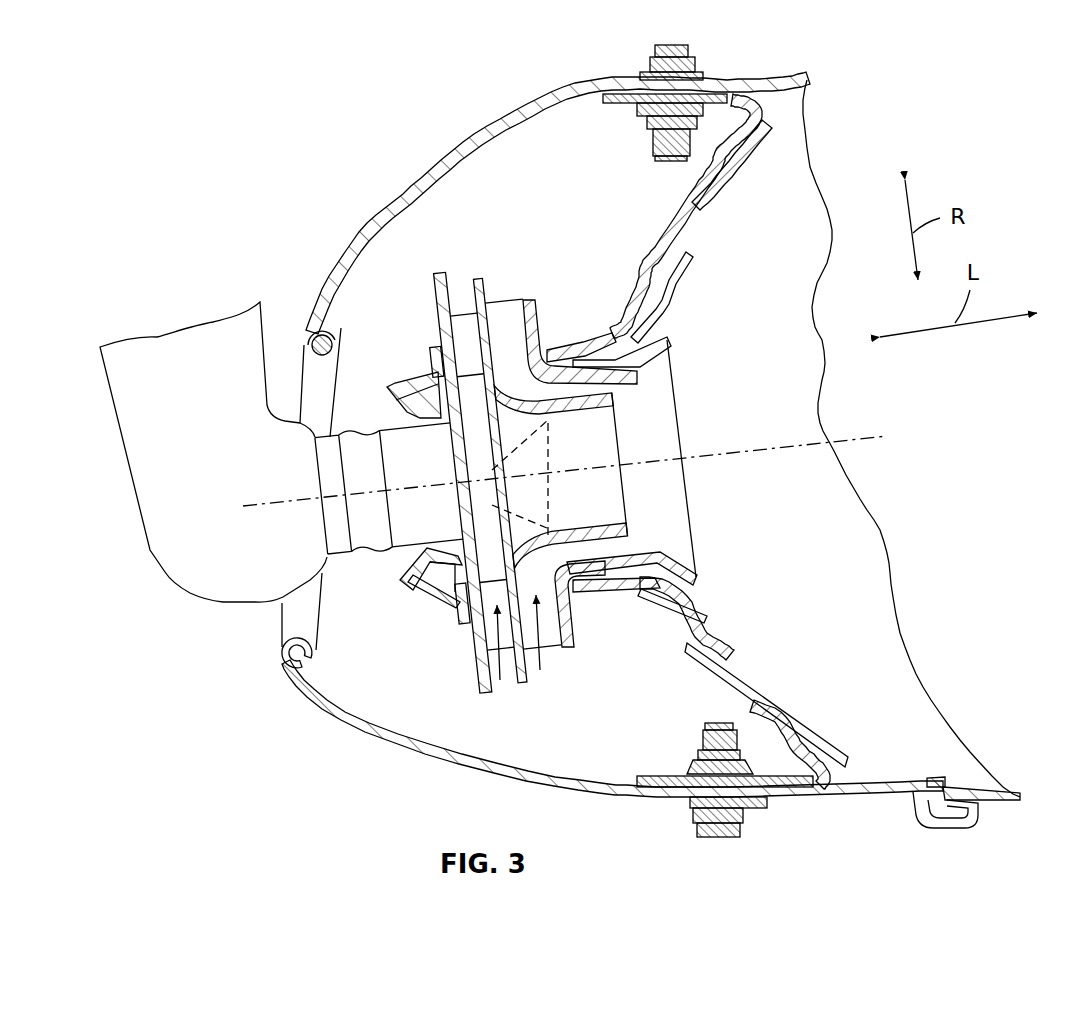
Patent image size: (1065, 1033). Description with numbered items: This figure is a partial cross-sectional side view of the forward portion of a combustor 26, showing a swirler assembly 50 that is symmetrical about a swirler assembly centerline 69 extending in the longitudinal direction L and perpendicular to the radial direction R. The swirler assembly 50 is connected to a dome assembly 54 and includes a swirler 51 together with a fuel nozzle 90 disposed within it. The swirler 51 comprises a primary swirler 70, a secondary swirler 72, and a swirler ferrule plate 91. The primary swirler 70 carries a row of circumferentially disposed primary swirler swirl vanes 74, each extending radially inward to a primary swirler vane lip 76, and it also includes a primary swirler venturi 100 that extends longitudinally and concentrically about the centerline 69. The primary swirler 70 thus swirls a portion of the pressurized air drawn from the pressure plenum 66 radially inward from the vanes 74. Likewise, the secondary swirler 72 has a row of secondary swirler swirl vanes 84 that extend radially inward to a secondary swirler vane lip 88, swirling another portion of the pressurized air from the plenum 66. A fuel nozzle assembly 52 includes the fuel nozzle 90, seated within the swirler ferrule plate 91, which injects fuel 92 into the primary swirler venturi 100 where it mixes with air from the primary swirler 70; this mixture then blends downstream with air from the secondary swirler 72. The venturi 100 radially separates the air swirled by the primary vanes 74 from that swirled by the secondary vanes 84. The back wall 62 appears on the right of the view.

The combustor 26 is at (258, 102).
The swirler assembly 50 is at (565, 266).
The swirler 51 is at (572, 612).
The fuel nozzle assembly 52 is at (138, 506).
The dome assembly 54 is at (793, 712).
The wall 62 is at (748, 521).
The pressure plenum 66 is at (372, 298).
The swirler assembly centerline 69 is at (860, 437).
The primary swirler 70 is at (456, 290).
The secondary swirler 72 is at (497, 290).
The primary swirler swirl vanes 74 is at (453, 313).
The primary swirler vane lip 76 is at (438, 393).
The secondary swirler swirl vanes 84 is at (520, 307).
The secondary swirler vane lip 88 is at (548, 398).
The fuel nozzle 90 is at (403, 538).
The swirler ferrule plate 91 is at (431, 607).
The fuel 92 is at (548, 480).
The primary swirler venturi 100 is at (595, 400).